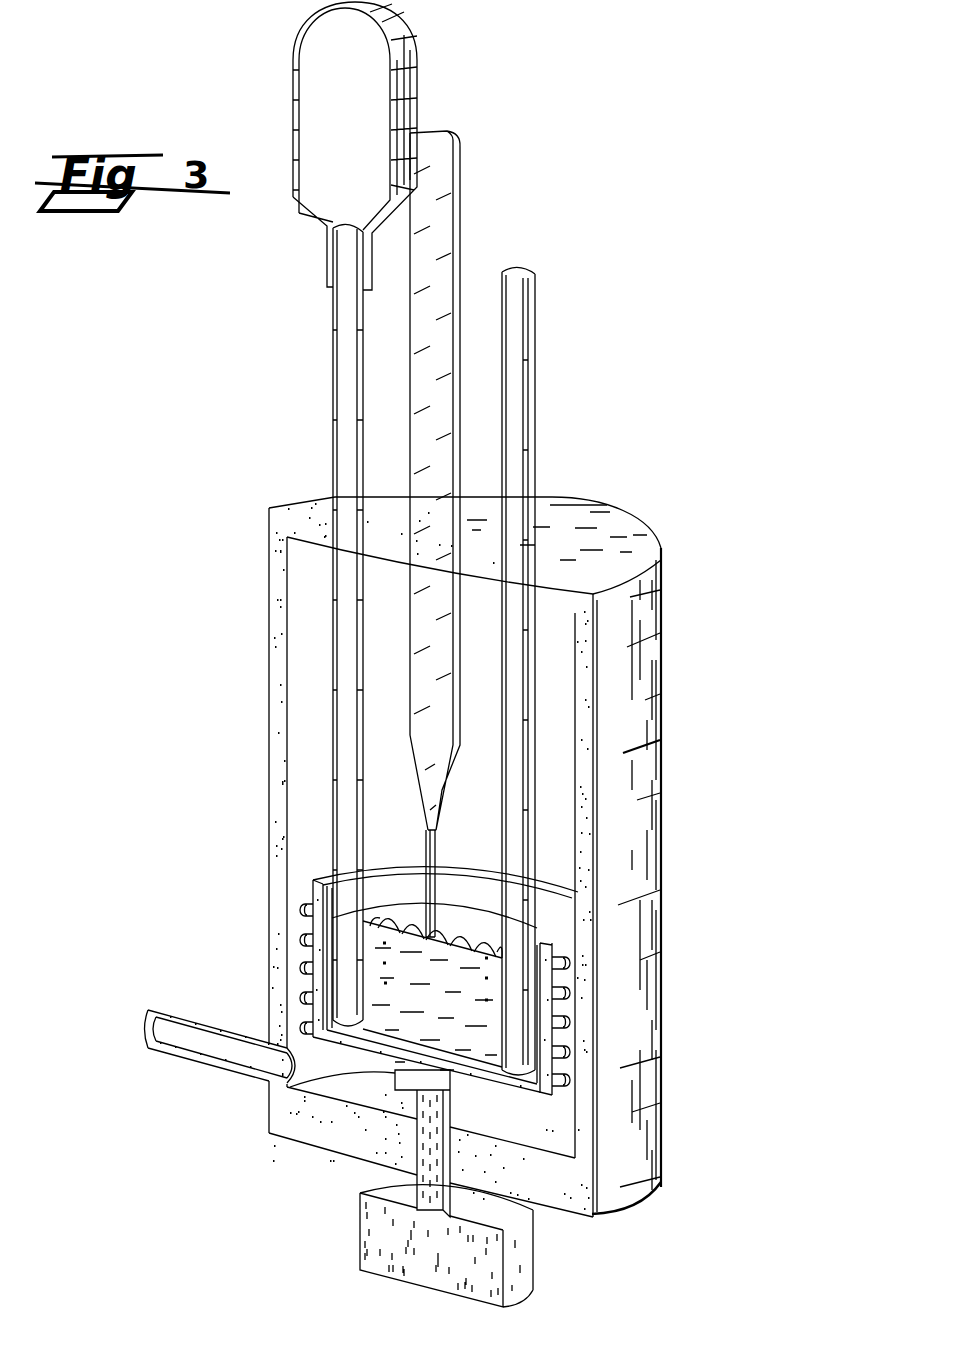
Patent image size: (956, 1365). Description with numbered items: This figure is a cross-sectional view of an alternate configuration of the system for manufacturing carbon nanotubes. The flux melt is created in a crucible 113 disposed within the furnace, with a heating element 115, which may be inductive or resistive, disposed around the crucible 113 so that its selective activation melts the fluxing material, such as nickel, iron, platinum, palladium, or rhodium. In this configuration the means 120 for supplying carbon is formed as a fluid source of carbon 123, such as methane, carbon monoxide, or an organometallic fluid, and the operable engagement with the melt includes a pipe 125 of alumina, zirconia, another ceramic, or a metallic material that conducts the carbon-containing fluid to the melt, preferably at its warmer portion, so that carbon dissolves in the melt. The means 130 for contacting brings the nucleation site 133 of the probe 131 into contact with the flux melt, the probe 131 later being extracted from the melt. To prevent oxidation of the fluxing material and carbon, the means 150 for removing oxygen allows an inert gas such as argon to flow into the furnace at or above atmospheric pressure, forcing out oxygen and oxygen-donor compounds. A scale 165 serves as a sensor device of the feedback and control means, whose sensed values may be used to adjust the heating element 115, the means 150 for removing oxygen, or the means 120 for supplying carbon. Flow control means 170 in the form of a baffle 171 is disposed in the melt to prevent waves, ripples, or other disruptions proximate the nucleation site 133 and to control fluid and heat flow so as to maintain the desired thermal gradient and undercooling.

The crucible 113 is at (310, 978).
The heating element 115 is at (307, 907).
The means for supplying carbon 120 is at (536, 296).
The fluid source of carbon 123 is at (412, 100).
The pipe 125 is at (333, 357).
The means for contacting nucleation site of probe with flux melt 130 is at (461, 203).
The probe 131 is at (455, 272).
The nucleation site 133 is at (434, 858).
The means for removing oxygen 150 is at (197, 1067).
The scale 165 is at (532, 1273).
The flow control means 170 is at (478, 933).
The baffle 171 is at (392, 912).